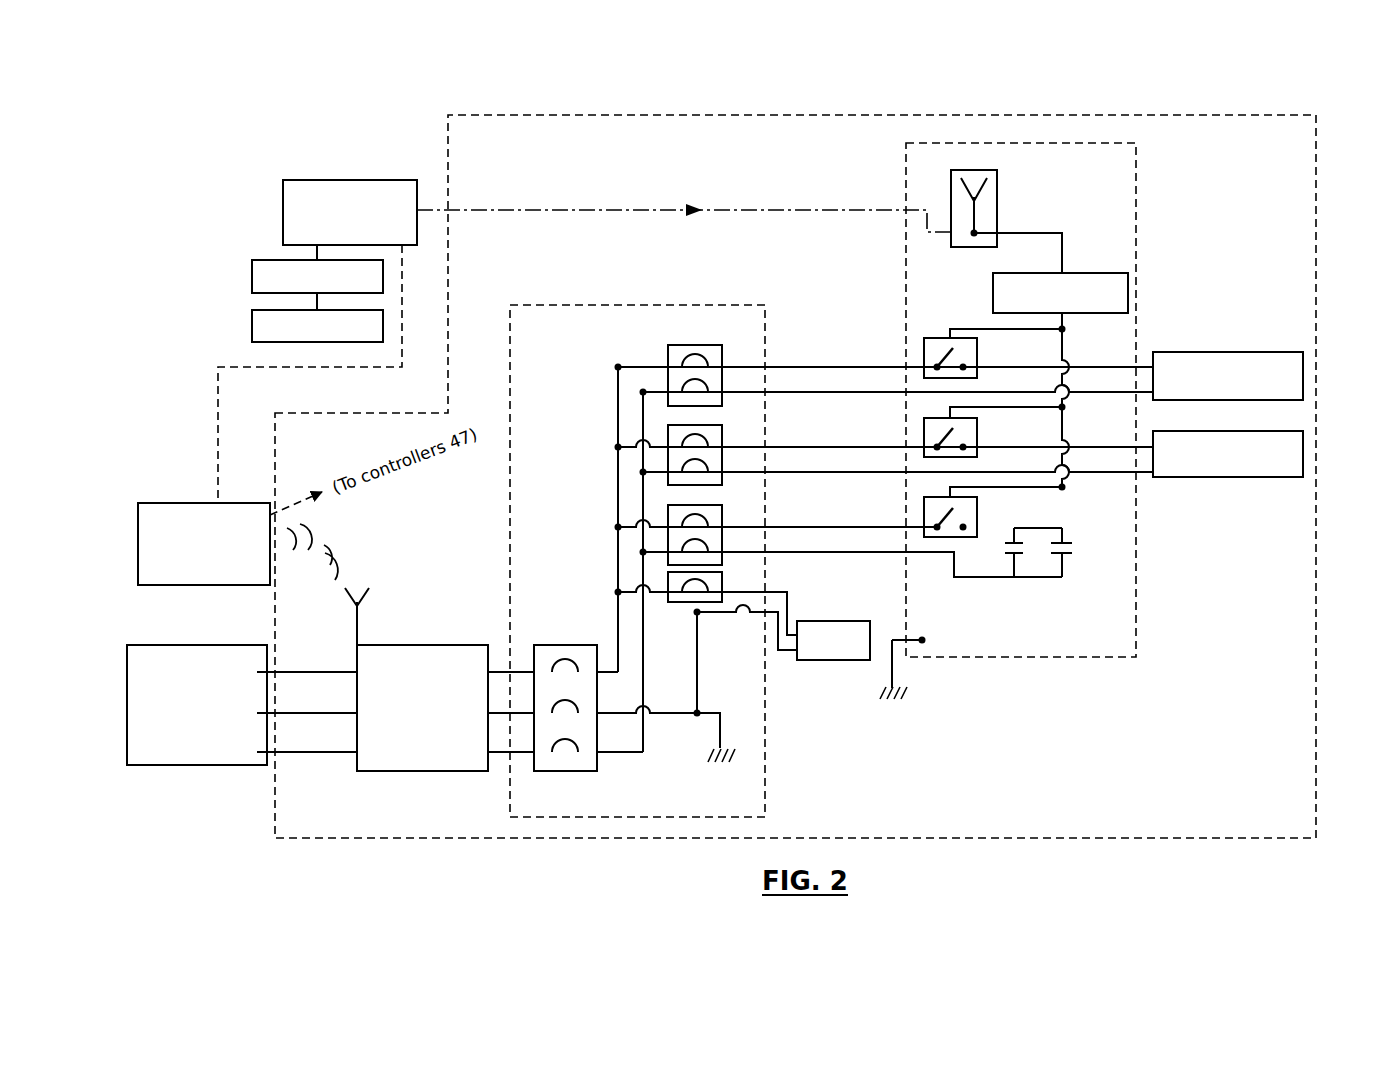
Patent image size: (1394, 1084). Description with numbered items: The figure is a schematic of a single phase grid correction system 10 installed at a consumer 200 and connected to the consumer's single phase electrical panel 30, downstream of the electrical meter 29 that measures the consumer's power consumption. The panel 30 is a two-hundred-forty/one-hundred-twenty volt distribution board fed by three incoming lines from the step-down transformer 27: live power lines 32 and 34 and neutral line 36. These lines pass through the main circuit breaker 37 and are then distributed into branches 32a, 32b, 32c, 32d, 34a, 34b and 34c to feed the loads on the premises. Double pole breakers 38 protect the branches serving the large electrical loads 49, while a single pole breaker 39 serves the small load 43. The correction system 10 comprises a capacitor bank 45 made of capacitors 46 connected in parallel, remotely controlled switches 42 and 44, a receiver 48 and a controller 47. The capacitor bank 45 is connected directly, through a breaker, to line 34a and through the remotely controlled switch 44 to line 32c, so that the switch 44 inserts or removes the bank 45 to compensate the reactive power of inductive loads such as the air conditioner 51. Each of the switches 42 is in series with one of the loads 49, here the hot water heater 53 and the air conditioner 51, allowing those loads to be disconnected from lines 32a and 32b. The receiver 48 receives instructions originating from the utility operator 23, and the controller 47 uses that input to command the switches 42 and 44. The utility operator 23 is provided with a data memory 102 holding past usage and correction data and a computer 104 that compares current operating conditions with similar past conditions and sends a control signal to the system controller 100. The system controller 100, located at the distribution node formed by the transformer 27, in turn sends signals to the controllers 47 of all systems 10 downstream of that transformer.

The single phase grid correction system 10 is at (1165, 176).
The consumer 200 is at (1316, 172).
The utility operator 23 is at (345, 180).
The computer 104 is at (252, 276).
The data memory 102 is at (252, 325).
The system controller 100 is at (143, 503).
The step-down transformer 27 is at (137, 645).
The electrical meter 29 is at (400, 771).
The electrical panel 30 is at (640, 302).
The power line 32 is at (317, 670).
The power line 34 is at (324, 712).
The neutral line 36 is at (303, 753).
The main circuit breaker 37 is at (588, 774).
The double pole breakers 38 is at (722, 356).
The single-pole circuit breaker 39 is at (722, 585).
The branch power line 32a is at (832, 366).
The branch power line 34a is at (867, 391).
The branch power line 32b is at (832, 446).
The branch power line 34b is at (862, 473).
The branch power line 32c is at (842, 528).
The branch power line 34c is at (895, 553).
The branch power line 32d is at (740, 594).
The small electrical load 43 is at (825, 660).
The remotely controlled switches 42 is at (977, 358).
The remotely controlled switch 44 is at (977, 512).
The capacitor bank 45 is at (1044, 592).
The capacitors 46 is at (1017, 554).
The controller 47 is at (1093, 273).
The receiver 48 is at (997, 201).
The electrical loads 49 is at (1306, 446).
The air conditioner 51 is at (1239, 477).
The hot water heater 53 is at (1255, 351).